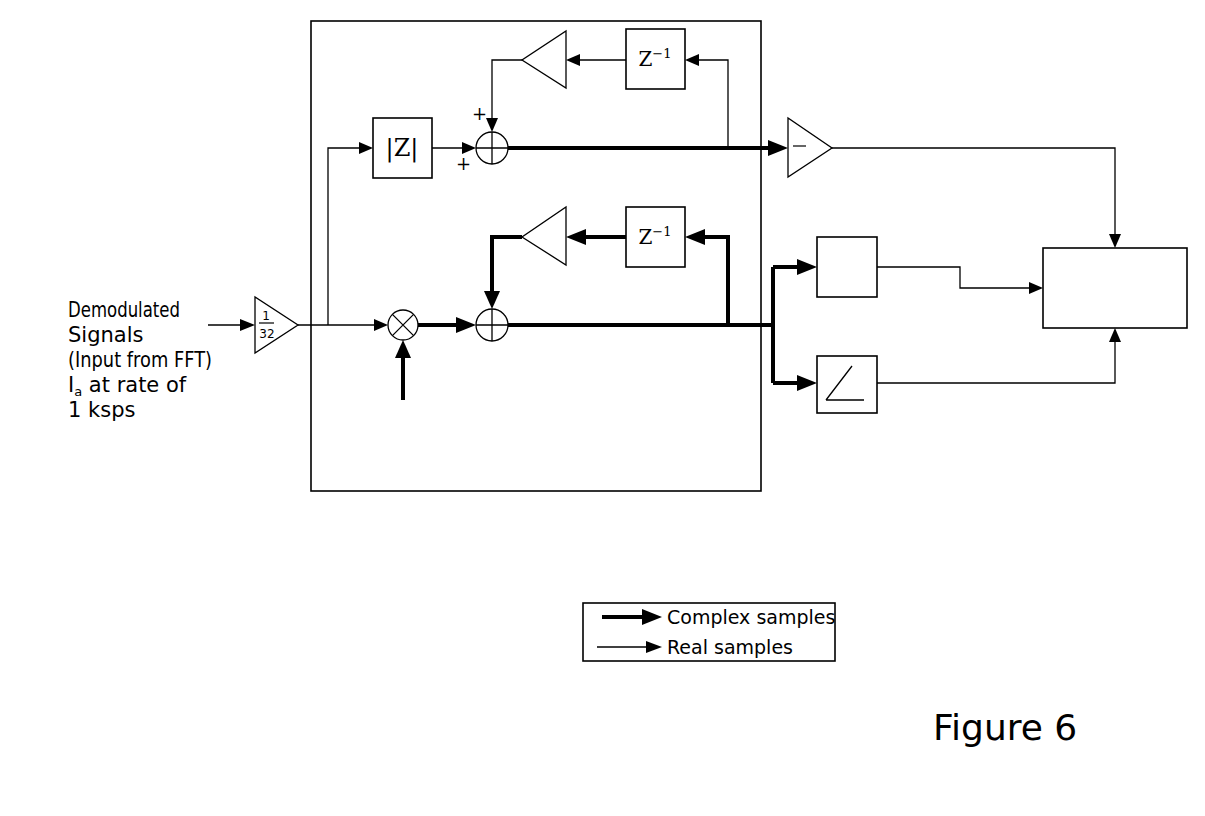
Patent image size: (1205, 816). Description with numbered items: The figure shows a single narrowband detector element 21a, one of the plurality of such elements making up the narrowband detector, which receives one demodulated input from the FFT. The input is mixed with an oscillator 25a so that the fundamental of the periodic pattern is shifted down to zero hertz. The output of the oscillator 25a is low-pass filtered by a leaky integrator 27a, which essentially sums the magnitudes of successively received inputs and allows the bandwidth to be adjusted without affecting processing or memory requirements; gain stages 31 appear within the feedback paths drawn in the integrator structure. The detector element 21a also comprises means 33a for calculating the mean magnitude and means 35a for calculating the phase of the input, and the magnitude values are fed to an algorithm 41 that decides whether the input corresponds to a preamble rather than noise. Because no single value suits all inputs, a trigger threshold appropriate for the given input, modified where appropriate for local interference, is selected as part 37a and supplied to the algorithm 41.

The detector element 21a is at (536, 256).
The oscillator 25a is at (397, 340).
The leaky integrator 27a is at (497, 340).
The feedback gain 31 is at (544, 148).
The means for calculating mean magnitude 33a is at (847, 237).
The means for calculating phase 35a is at (848, 413).
The trigger threshold part 37a is at (940, 97).
The algorithm 41 is at (1115, 288).